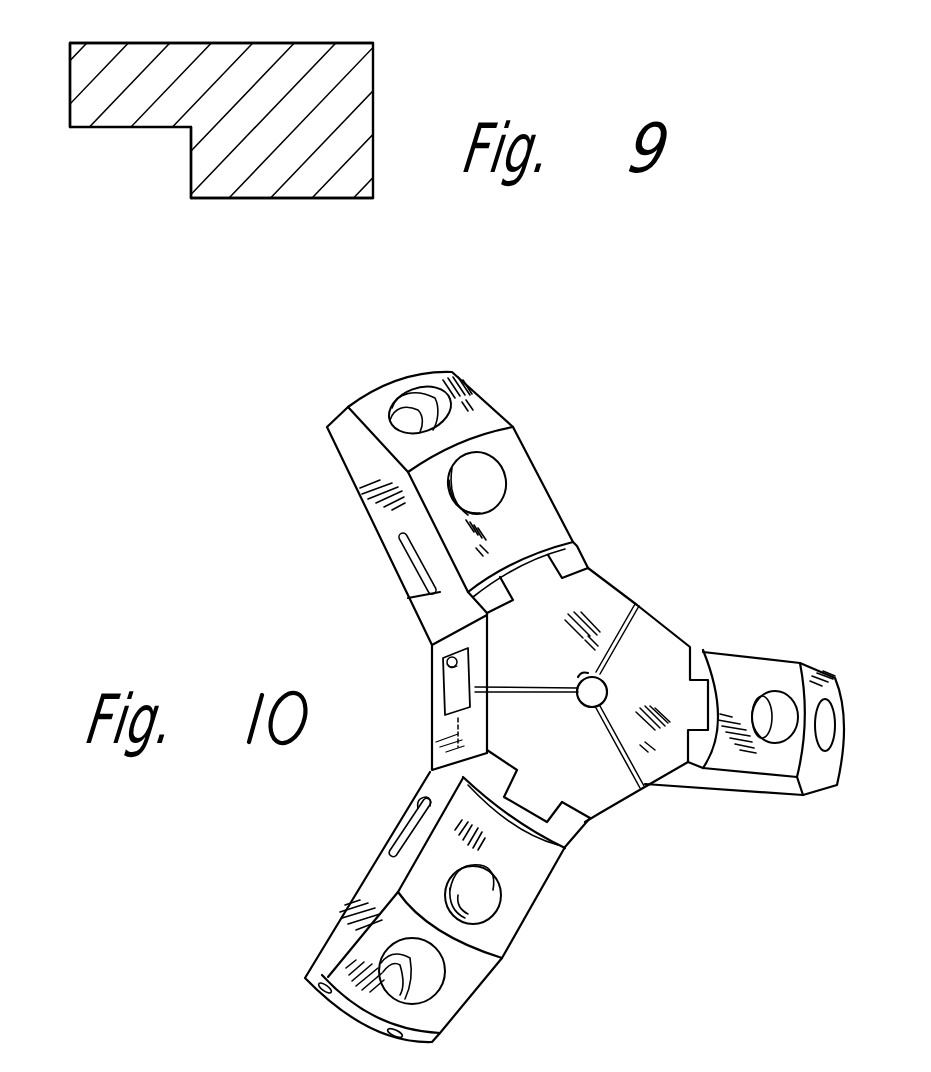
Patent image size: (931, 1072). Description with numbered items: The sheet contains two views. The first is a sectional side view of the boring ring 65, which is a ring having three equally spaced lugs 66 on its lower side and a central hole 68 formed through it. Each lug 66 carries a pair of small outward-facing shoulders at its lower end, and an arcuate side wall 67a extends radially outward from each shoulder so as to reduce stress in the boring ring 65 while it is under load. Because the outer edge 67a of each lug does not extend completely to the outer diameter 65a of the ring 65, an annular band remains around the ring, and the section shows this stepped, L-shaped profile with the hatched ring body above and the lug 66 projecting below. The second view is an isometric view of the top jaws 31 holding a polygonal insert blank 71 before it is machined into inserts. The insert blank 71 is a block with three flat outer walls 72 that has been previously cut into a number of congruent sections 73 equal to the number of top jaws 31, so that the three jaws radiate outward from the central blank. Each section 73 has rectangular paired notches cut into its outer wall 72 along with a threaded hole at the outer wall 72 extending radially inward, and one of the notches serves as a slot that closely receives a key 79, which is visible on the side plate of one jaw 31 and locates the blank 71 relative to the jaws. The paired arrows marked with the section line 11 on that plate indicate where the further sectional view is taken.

In FIG. 9, the boring ring 65 is at (143, 40).
In FIG. 9, the outer diameter of ring 65a is at (70, 110).
In FIG. 9, the lug 66 is at (216, 190).
In FIG. 9, the arcuate side wall 67a is at (191, 173).
In FIG. 9, the central hole 68 is at (375, 106).
In FIG. 10, the top jaws 31 is at (542, 478).
In FIG. 10, the polygonal insert blank 71 is at (655, 590).
In FIG. 10, the flat outer wall 72 is at (606, 810).
In FIG. 10, the congruent section 73 is at (672, 642).
In FIG. 10, the key 79 is at (448, 687).
In FIG. 10, the section line 11- 11 is at (433, 645).